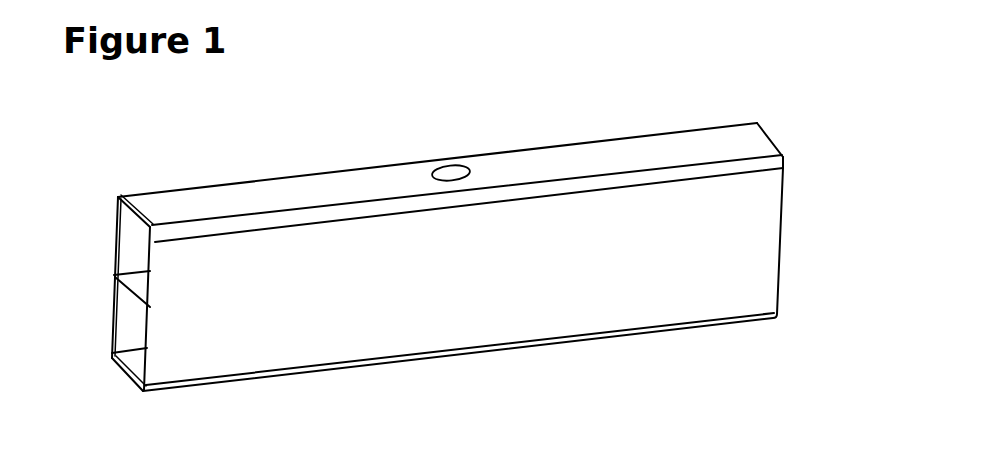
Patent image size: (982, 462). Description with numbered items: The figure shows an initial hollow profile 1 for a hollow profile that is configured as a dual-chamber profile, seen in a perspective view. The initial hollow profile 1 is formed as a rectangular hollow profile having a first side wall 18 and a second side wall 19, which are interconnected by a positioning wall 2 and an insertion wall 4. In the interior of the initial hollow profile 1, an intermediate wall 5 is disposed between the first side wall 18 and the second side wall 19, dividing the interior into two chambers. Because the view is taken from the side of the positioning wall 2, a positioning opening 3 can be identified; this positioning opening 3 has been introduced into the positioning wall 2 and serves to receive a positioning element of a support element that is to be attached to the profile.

The initial hollow profile 1 is at (594, 100).
The positioning wall 2 is at (377, 183).
The positioning opening 3 is at (452, 170).
The insertion wall 4 is at (133, 367).
The intermediate wall 5 is at (134, 283).
The first side wall 18 is at (653, 290).
The second side wall 19 is at (117, 317).